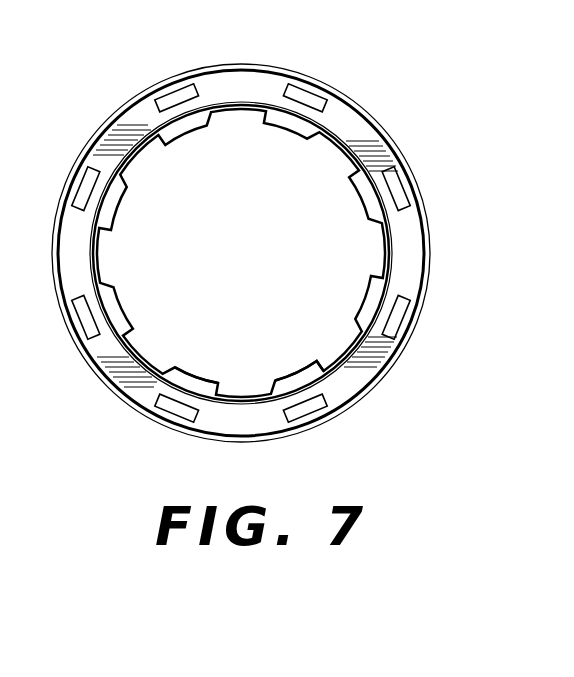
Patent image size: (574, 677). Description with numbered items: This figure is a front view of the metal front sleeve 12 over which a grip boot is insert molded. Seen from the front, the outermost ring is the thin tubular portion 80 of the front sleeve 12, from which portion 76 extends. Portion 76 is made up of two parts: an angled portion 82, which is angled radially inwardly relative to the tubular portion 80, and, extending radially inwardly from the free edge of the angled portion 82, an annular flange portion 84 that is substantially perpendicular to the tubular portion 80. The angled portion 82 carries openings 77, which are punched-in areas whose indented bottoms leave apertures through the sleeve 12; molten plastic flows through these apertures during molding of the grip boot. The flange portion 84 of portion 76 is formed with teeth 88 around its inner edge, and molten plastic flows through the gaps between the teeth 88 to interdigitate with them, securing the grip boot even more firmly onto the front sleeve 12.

The front sleeve 12 is at (117, 87).
The portion 76 is at (116, 221).
The openings 77 is at (308, 104).
The thin tubular portion 80 is at (410, 183).
The angled portion 82 is at (230, 87).
The annular flange portion 84 is at (296, 368).
The teeth 88 is at (184, 376).